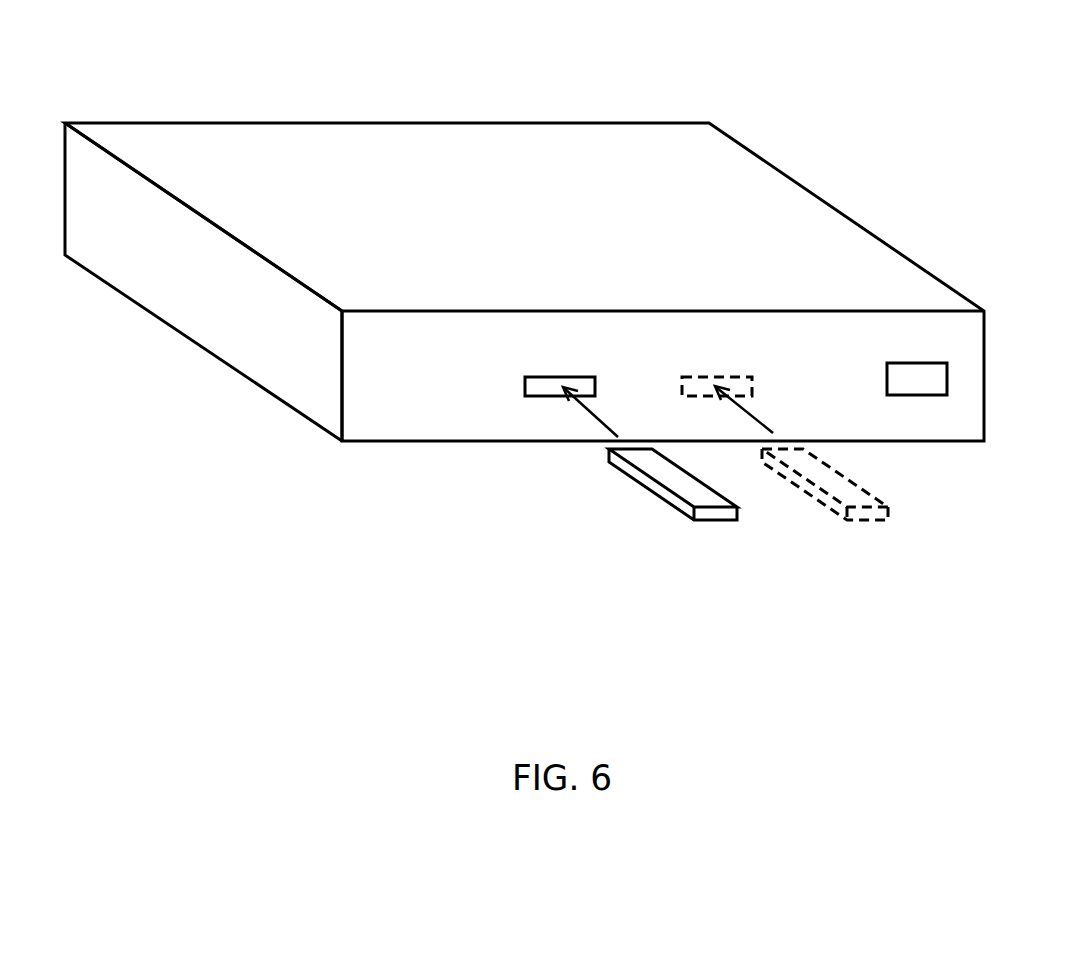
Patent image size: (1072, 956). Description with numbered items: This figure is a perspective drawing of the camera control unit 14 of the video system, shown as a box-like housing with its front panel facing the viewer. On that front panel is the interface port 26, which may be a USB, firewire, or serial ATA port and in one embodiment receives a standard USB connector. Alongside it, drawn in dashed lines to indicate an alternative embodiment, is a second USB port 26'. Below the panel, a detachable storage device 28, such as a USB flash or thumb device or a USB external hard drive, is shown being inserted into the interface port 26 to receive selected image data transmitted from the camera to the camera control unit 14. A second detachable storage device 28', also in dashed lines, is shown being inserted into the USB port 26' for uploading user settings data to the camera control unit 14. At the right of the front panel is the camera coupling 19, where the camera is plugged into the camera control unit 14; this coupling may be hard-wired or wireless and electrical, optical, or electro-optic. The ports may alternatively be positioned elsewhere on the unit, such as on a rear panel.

The camera control unit 14 is at (380, 443).
The interface port 26 is at (557, 378).
The USB port 26' is at (711, 376).
The detachable storage device 28 is at (663, 495).
The detachable storage device 28' is at (823, 503).
The camera coupling 19 is at (947, 380).